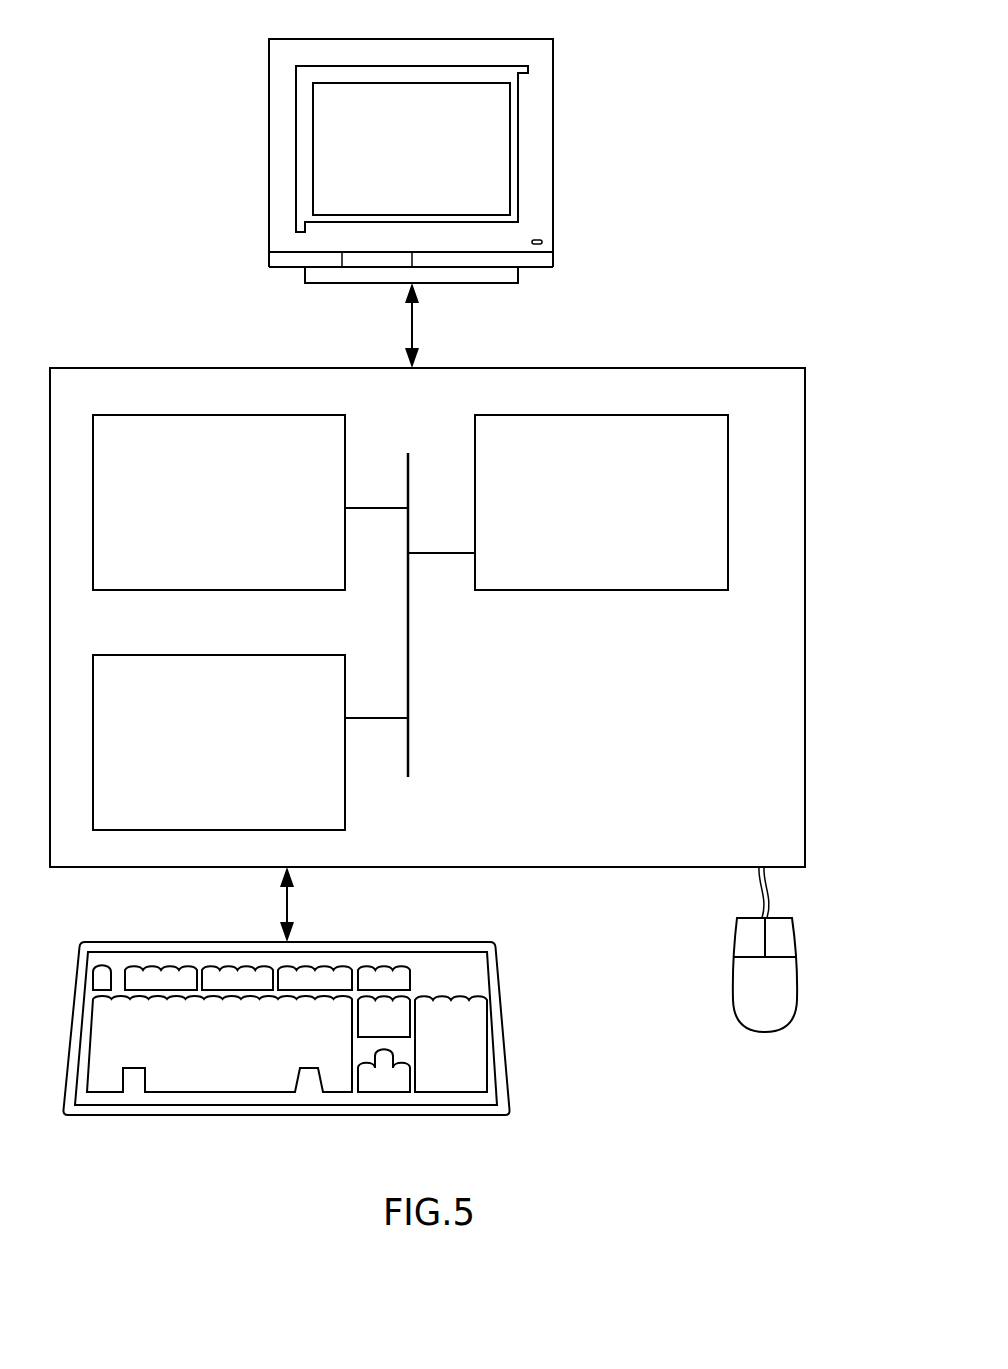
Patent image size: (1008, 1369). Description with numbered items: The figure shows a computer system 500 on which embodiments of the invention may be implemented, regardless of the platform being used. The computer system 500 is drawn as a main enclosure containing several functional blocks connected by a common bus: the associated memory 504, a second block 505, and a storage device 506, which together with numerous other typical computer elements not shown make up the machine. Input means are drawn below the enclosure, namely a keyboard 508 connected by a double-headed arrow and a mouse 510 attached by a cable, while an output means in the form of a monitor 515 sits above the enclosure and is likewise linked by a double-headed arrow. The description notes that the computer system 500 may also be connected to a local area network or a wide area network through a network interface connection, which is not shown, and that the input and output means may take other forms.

The computer system 500 is at (826, 210).
The memory 504 is at (242, 515).
The memory 505 is at (648, 515).
The storage device 506 is at (239, 755).
The keyboard 508 is at (235, 1074).
The mouse 510 is at (788, 999).
The display monitor 515 is at (434, 165).